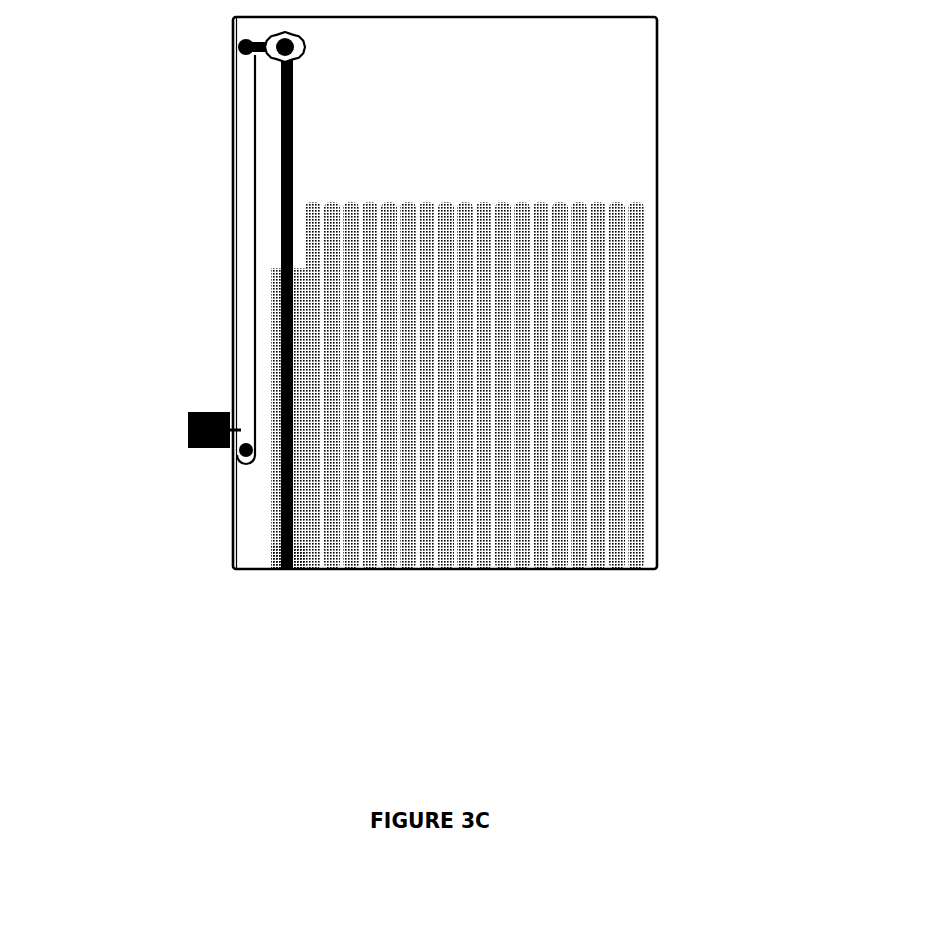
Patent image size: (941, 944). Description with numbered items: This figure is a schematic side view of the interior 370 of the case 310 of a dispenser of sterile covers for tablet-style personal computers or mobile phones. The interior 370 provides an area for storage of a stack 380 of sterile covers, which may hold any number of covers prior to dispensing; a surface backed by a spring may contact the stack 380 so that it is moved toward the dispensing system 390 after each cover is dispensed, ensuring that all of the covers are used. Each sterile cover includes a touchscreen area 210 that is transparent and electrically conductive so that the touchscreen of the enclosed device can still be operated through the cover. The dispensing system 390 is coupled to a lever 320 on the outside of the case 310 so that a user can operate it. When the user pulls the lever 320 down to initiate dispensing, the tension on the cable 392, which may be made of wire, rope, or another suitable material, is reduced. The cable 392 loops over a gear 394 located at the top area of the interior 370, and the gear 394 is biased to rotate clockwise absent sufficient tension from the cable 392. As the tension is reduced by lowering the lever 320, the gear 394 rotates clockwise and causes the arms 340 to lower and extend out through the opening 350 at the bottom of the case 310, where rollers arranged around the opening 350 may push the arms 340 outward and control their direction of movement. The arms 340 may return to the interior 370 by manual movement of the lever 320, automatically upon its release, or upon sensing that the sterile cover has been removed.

The case 310 is at (760, 198).
The interior 370 is at (582, 118).
The stack 380 is at (475, 175).
The touchscreen area 210 is at (275, 475).
The opening 350 is at (274, 569).
The arms 340 is at (296, 162).
The cable 392 is at (252, 199).
The dispensing system 390 is at (208, 82).
The gear 394 is at (300, 48).
The lever 320 is at (188, 432).